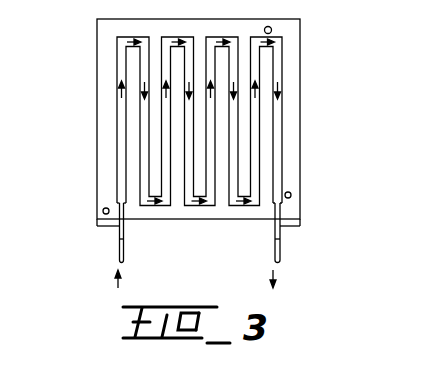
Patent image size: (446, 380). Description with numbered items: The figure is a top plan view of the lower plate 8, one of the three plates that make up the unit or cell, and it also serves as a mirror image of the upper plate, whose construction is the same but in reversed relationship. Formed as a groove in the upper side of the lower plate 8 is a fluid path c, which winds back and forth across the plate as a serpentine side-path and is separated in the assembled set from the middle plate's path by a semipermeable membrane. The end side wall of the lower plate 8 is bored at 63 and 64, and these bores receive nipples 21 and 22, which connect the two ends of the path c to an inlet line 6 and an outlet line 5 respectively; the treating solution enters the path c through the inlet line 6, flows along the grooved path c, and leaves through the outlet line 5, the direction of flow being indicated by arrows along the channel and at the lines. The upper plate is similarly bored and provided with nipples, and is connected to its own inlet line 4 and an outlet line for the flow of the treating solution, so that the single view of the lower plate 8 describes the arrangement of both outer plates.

The lower plate 8 is at (300, 85).
The fluid path c is at (285, 120).
The inlet line 4 is at (257, 152).
The bore 63 is at (100, 218).
The bore 64 is at (282, 217).
The nipple 21 is at (117, 232).
The nipple 22 is at (282, 233).
The inlet line 6 is at (117, 252).
The outlet line 5 is at (282, 253).